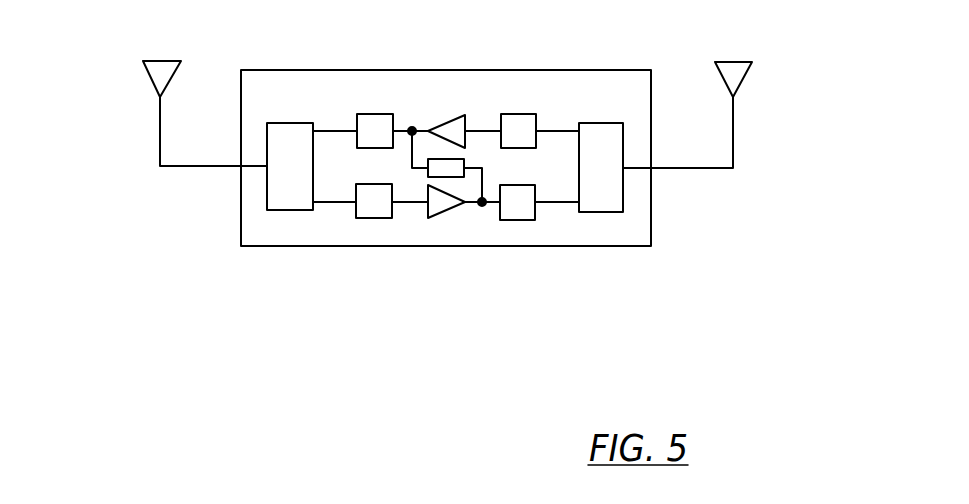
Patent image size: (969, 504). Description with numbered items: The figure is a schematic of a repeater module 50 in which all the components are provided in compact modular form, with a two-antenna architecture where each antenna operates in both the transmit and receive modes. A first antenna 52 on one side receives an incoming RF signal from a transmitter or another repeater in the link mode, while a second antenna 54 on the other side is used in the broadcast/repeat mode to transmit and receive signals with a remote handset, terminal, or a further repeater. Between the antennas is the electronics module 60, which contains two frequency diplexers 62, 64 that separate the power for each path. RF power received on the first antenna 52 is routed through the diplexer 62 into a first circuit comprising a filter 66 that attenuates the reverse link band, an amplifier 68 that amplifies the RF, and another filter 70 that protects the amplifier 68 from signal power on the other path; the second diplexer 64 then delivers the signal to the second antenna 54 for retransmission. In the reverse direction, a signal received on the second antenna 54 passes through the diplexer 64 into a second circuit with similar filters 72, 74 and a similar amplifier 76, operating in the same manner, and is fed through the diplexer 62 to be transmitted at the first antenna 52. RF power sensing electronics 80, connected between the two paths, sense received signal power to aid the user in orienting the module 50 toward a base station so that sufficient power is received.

The repeater module 50 is at (690, 219).
The first antenna 52 is at (748, 78).
The second antenna 54 is at (148, 77).
The electronics module 60 is at (325, 80).
The frequency diplexer 62 is at (623, 130).
The second frequency diplexer 64 is at (267, 197).
The filter 66 is at (518, 114).
The amplifier 68 is at (462, 115).
The filter 70 is at (376, 114).
The filter 72 is at (374, 218).
The filter 74 is at (517, 220).
The amplifier 76 is at (432, 218).
The RF power sensing electronics 80 is at (428, 169).